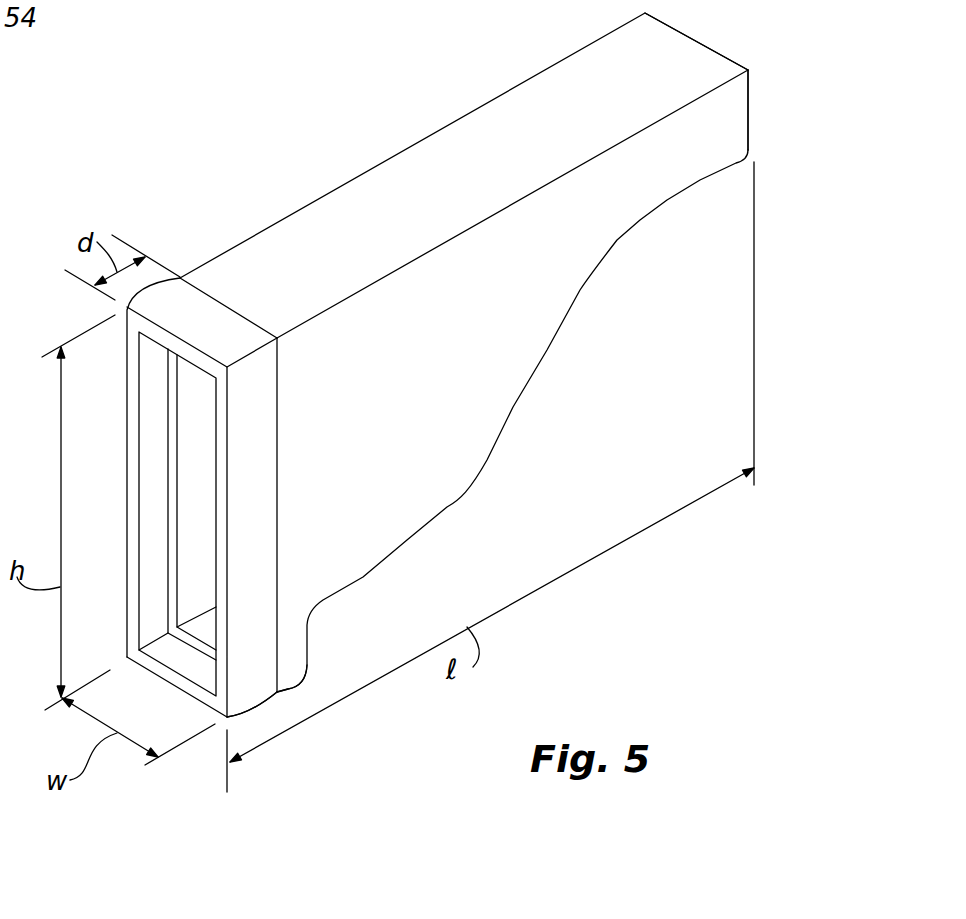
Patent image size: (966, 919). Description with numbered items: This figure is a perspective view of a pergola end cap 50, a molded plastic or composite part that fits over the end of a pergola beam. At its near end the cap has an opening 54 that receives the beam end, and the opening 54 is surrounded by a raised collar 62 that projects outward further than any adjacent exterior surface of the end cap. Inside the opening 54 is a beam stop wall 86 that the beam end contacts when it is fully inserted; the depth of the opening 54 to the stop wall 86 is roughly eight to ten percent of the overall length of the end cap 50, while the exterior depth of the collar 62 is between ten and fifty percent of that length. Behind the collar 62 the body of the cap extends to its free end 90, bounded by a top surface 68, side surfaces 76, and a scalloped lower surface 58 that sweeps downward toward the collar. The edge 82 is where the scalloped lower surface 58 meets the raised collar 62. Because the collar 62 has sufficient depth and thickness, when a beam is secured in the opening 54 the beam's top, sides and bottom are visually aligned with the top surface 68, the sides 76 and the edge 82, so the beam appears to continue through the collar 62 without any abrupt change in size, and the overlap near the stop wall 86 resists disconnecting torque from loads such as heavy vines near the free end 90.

The pergola end cap 50 is at (444, 358).
The opening 54 is at (160, 472).
The lower surface 58 is at (503, 470).
The raised collar 62 is at (258, 553).
The top surface 68 is at (386, 255).
The pergola end cap sides 76 is at (443, 380).
The edge 82 is at (288, 693).
The beam stop wall 86 is at (172, 555).
The pergola end cap free end 90 is at (773, 98).